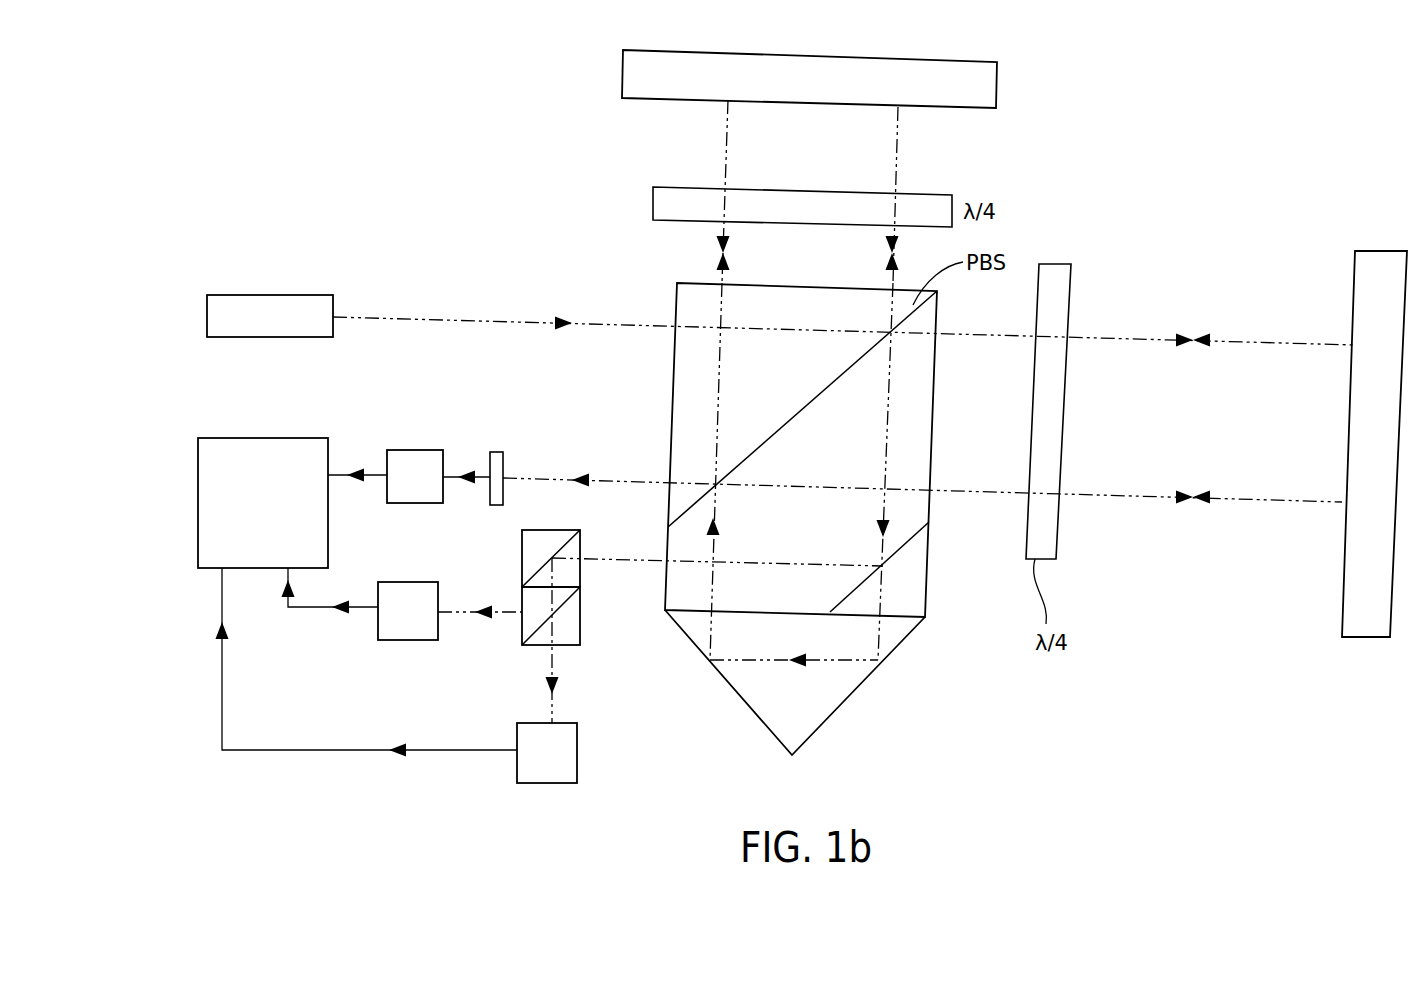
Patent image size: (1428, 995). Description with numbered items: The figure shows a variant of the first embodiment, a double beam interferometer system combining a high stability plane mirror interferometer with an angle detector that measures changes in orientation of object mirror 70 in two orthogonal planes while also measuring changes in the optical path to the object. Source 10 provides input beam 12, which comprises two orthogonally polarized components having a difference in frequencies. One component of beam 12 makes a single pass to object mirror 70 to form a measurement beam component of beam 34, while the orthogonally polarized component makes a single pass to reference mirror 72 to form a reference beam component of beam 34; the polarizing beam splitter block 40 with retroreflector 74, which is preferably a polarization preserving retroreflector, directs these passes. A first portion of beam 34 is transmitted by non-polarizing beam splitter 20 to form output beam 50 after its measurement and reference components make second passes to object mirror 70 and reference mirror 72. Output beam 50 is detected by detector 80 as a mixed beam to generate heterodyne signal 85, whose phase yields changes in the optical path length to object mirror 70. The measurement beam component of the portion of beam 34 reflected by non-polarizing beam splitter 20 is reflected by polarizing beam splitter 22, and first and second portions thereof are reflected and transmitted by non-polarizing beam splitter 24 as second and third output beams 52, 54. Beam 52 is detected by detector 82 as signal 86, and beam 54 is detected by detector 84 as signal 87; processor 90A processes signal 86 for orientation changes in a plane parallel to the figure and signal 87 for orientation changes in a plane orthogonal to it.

The source 10 is at (283, 295).
The input beam 12 is at (423, 317).
The non-polarizing beam splitter 20 is at (898, 548).
The polarizing beam splitter 22 is at (542, 530).
The non-polarizing beam splitter 24 is at (582, 624).
The beam 34 is at (883, 513).
The polarizing beam splitter 40 is at (793, 283).
The output beam 50 is at (548, 478).
The second output beam 52 is at (490, 605).
The third output beam 54 is at (550, 660).
The object mirror 70 is at (1353, 267).
The reference mirror 72 is at (997, 91).
The retroreflector 74 is at (843, 710).
The detector 80 is at (419, 450).
The detector 82 is at (420, 640).
The detector 84 is at (577, 749).
The heterodyne signal 85 is at (360, 478).
The signal 86 is at (338, 610).
The signal 87 is at (343, 752).
The processor 90A is at (282, 438).